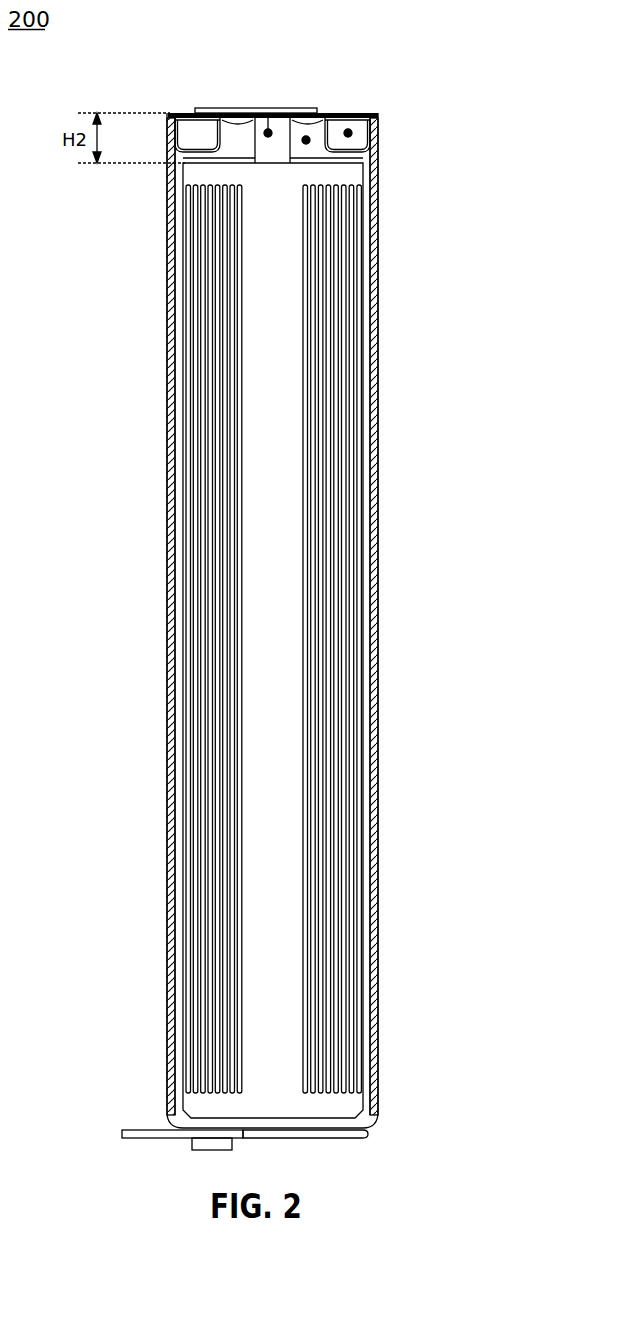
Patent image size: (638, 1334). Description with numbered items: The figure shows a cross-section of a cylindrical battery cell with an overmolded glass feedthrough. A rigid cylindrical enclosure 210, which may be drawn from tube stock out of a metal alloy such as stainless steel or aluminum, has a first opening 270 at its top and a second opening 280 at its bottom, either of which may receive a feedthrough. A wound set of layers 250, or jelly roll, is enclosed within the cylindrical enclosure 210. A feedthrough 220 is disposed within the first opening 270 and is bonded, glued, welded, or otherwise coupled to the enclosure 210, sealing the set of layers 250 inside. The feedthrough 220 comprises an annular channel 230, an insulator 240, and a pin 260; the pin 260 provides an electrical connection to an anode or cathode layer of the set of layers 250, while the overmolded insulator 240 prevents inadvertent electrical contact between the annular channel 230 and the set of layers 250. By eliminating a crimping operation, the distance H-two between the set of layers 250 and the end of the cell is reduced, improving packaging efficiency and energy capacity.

The cylindrical enclosure 210 is at (375, 316).
The feedthrough 220 is at (179, 88).
The annular channel 230 is at (350, 133).
The insulator 240 is at (306, 137).
The wound set of layers 250 is at (183, 422).
The pin 260 is at (268, 113).
The first opening 270 is at (368, 110).
The second opening 280 is at (368, 1136).